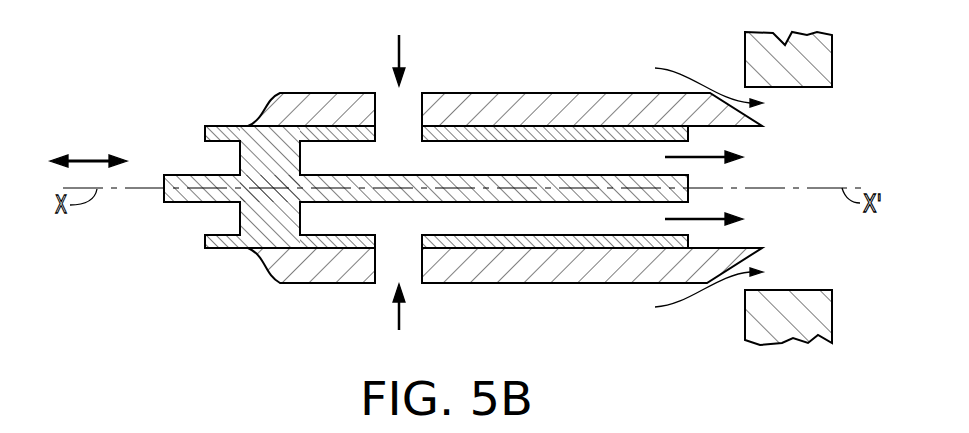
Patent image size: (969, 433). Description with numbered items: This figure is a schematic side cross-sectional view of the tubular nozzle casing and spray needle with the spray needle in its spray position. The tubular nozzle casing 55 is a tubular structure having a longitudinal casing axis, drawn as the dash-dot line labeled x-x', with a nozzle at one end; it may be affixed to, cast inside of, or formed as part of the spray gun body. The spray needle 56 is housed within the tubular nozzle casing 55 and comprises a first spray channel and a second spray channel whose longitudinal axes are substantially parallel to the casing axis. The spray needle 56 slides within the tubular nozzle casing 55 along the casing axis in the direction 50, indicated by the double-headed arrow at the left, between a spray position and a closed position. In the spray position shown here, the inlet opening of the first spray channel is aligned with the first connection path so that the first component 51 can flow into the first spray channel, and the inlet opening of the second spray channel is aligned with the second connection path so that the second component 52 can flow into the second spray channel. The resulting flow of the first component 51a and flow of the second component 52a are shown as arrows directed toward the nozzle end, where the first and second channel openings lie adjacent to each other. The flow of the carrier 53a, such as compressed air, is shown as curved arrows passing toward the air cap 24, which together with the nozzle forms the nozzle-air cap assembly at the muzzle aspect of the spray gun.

The air cap 24 is at (832, 313).
The direction 50 is at (100, 152).
The first component 51 is at (398, 50).
The second component 52 is at (398, 305).
The flow of the first component 51a is at (712, 152).
The flow of the second component 52a is at (712, 218).
The flow of the carrier 53a is at (677, 65).
The tubular nozzle casing 55 is at (566, 72).
The spray needle 56 is at (148, 199).